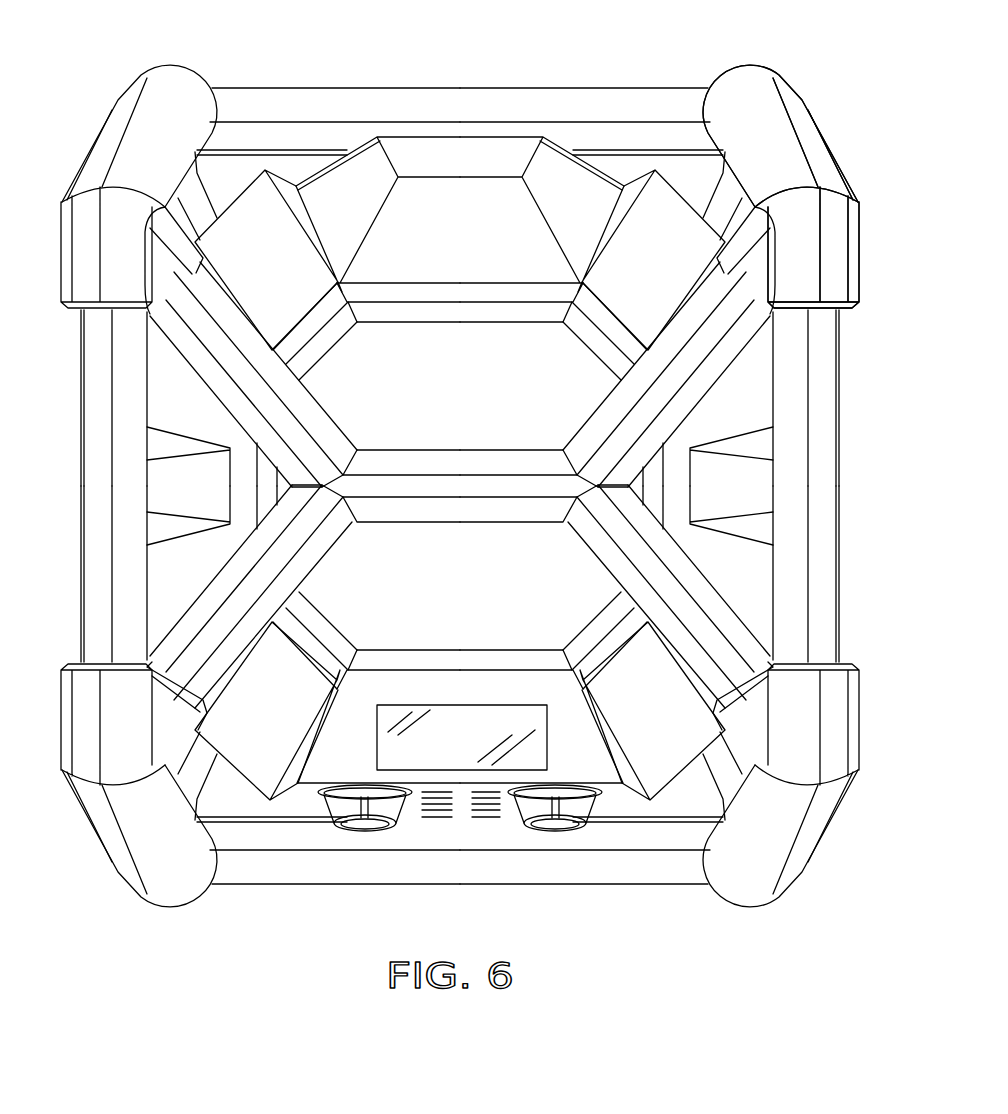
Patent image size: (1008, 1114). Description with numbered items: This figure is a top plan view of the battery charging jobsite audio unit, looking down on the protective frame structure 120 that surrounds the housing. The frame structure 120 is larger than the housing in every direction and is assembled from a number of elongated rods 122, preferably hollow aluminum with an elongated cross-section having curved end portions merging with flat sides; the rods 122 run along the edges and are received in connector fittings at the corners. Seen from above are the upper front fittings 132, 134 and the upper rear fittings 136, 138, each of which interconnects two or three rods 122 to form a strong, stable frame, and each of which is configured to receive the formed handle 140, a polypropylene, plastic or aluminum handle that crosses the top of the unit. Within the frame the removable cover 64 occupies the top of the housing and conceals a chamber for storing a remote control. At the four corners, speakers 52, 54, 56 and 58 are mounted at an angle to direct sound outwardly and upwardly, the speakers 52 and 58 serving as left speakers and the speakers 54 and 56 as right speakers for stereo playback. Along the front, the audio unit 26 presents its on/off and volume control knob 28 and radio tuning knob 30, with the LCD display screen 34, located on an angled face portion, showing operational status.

The frame structure 120 is at (798, 93).
The elongated rods 122 is at (333, 87).
The upper rear fitting 136 is at (120, 112).
The upper rear fitting 138 is at (826, 165).
The upper front fitting 132 is at (128, 820).
The upper front fitting 134 is at (765, 880).
The speaker 54 is at (262, 190).
The speaker 58 is at (660, 193).
The speaker 52 is at (263, 765).
The speaker 56 is at (655, 770).
The cover 64 is at (418, 338).
The formed handle 140 is at (430, 450).
The audio unit 26 is at (492, 718).
The LCD display screen 34 is at (447, 727).
The on/off and volume control knob 28 is at (366, 830).
The radio tuning knob 30 is at (556, 831).